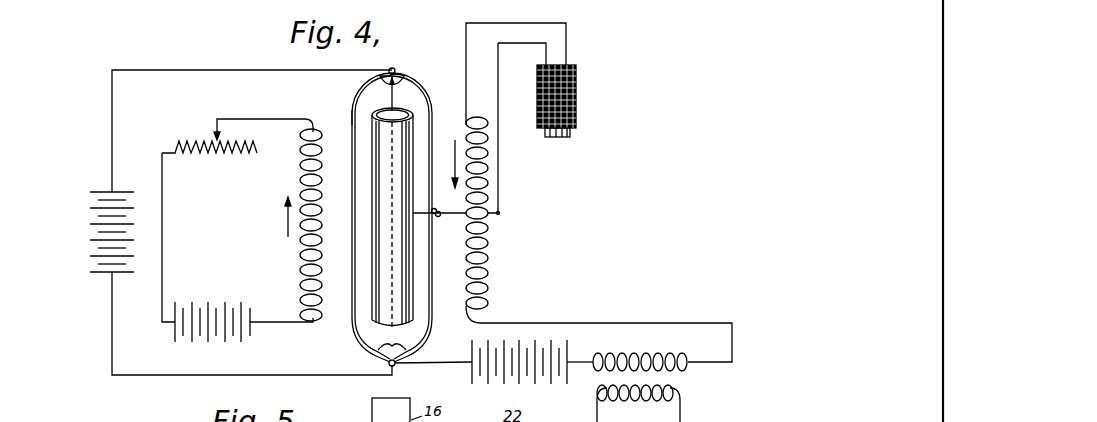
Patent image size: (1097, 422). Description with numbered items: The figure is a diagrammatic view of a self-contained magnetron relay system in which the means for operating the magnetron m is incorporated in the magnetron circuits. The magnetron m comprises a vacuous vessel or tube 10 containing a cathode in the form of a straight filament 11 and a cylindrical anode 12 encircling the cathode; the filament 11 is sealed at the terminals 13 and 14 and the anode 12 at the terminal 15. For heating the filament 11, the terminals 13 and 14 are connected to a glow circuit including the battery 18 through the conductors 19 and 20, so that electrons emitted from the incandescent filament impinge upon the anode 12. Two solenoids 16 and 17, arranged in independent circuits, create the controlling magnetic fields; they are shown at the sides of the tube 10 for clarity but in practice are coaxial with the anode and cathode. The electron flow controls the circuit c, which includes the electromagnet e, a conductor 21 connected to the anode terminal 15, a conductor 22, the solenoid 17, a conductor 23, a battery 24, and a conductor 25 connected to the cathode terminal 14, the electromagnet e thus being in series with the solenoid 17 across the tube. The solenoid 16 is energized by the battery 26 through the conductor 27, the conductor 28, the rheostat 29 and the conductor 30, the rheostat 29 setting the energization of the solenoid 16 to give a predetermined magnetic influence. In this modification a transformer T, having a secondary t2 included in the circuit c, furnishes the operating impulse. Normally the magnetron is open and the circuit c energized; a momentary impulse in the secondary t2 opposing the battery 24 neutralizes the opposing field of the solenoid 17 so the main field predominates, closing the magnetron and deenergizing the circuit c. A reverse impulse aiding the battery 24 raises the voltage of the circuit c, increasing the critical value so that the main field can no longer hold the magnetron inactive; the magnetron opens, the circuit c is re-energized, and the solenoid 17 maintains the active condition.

The vacuous vessel or tube 10 is at (420, 92).
The filament 11 is at (396, 100).
The cylindrical anode 12 is at (405, 142).
The terminal 13 is at (394, 67).
The terminal 14 is at (396, 366).
The terminal 15 is at (440, 216).
The solenoid 16 is at (300, 178).
The solenoid 17 is at (490, 169).
The battery 18 is at (88, 240).
The conductor 19 is at (258, 69).
The conductor 20 is at (155, 376).
The conductor 21 is at (499, 145).
The conductor 22 is at (548, 22).
The conductor 23 is at (616, 318).
The battery 24 is at (513, 346).
The conductor 25 is at (448, 361).
The battery 26 is at (218, 306).
The conductor 27 is at (273, 320).
The conductor 28 is at (276, 118).
The rheostat 29 is at (222, 150).
The conductor 30 is at (163, 256).
The magnetron m is at (358, 101).
The electromagnet e is at (577, 92).
The circuit c is at (499, 208).
The secondary t2 is at (645, 354).
The transformer T is at (648, 396).